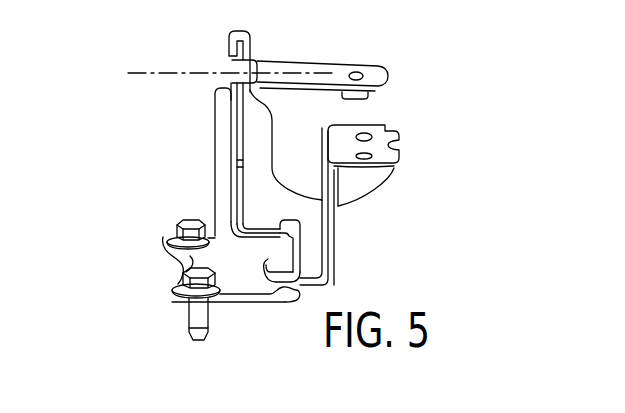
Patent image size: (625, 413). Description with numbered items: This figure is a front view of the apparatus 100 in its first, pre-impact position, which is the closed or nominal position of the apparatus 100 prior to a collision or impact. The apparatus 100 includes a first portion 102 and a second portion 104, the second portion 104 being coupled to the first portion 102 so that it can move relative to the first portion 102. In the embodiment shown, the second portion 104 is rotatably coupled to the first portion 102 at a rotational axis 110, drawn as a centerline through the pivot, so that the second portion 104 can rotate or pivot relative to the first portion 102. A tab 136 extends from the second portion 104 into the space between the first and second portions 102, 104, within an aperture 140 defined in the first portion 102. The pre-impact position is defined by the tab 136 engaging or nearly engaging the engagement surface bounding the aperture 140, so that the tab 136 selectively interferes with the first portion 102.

The apparatus 100 is at (392, 178).
The first portion 102 is at (167, 262).
The second portion 104 is at (355, 141).
The rotational axis 110 is at (177, 72).
The tab 136 is at (227, 163).
The aperture 140 is at (217, 175).